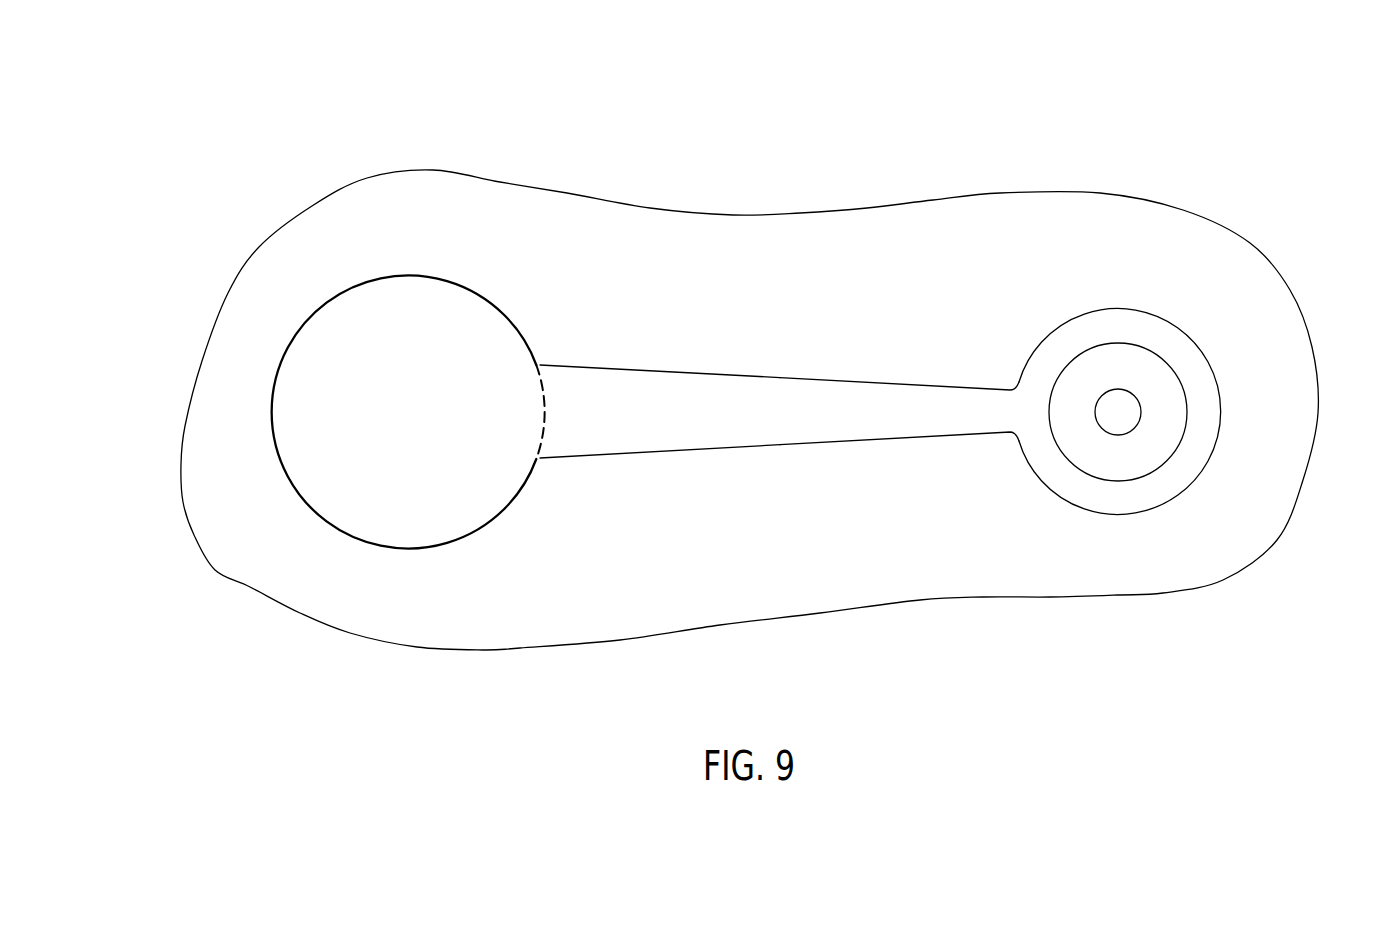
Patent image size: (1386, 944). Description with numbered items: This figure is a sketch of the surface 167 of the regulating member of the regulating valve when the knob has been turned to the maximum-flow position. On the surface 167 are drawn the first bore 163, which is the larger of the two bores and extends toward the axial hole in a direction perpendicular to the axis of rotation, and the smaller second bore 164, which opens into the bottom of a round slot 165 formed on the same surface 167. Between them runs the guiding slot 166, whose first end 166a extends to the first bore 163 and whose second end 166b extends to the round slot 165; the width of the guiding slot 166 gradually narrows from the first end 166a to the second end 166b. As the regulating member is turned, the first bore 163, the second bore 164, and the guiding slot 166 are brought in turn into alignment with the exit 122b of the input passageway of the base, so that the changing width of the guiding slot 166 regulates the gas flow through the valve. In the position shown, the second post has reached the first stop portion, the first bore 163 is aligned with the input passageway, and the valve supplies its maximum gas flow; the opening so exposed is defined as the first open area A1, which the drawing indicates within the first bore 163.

The first open area A1 is at (407, 293).
The first bore 163 is at (464, 293).
The exit 122b is at (511, 317).
The surface 167 is at (948, 247).
The guiding slot 166 is at (784, 483).
The first end 166a is at (605, 432).
The second end 166b is at (992, 413).
The second bore 164 is at (1133, 390).
The round slot 165 is at (1173, 416).